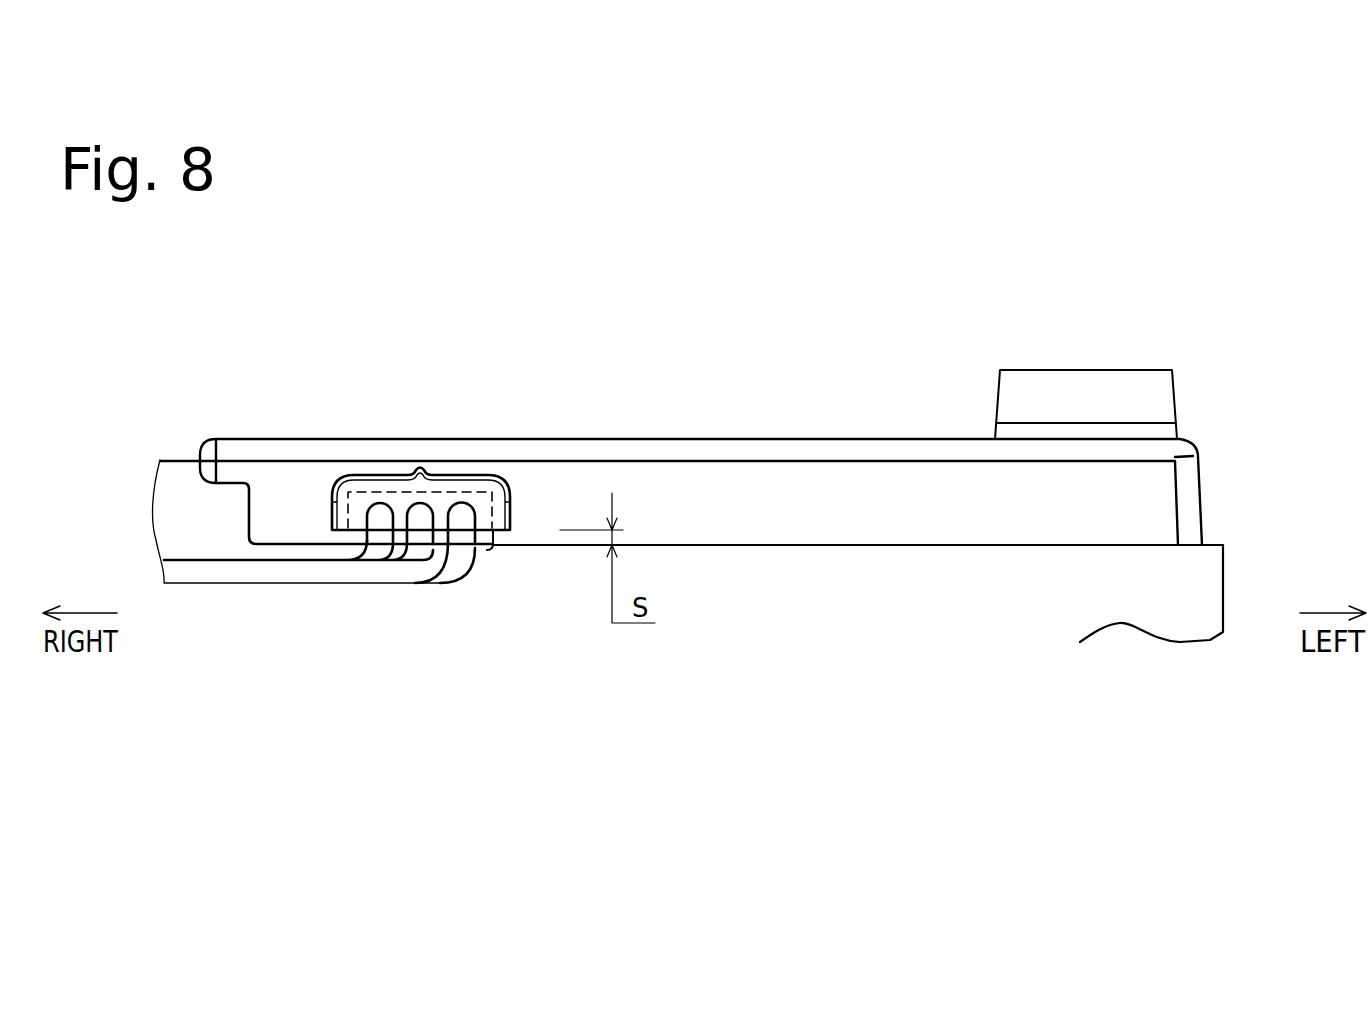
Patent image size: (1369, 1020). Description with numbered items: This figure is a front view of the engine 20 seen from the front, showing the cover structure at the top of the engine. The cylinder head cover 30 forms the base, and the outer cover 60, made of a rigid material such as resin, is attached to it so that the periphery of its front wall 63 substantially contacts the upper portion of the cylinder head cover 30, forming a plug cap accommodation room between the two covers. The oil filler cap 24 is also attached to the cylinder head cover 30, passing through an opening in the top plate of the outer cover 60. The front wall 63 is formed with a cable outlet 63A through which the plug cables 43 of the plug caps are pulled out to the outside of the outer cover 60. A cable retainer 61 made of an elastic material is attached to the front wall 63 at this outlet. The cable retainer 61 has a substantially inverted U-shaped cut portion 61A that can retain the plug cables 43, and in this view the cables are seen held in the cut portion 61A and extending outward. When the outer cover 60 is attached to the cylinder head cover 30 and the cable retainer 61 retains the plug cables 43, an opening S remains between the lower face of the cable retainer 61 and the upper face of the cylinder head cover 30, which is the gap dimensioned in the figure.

The engine 20 is at (691, 434).
The oil filler cap 24 is at (1080, 388).
The cylinder head cover 30 is at (1256, 545).
The plug cable 43 is at (217, 575).
The outer cover 60 is at (648, 419).
The cable retainer 61 is at (375, 581).
The inverted U-shaped cut portion 61A is at (380, 505).
The front wall 63 is at (443, 515).
The cable outlet 63A is at (487, 537).